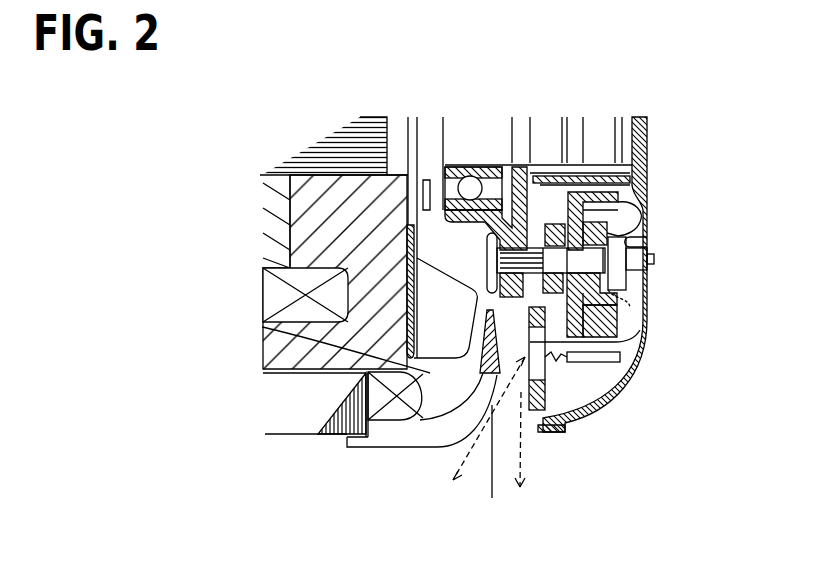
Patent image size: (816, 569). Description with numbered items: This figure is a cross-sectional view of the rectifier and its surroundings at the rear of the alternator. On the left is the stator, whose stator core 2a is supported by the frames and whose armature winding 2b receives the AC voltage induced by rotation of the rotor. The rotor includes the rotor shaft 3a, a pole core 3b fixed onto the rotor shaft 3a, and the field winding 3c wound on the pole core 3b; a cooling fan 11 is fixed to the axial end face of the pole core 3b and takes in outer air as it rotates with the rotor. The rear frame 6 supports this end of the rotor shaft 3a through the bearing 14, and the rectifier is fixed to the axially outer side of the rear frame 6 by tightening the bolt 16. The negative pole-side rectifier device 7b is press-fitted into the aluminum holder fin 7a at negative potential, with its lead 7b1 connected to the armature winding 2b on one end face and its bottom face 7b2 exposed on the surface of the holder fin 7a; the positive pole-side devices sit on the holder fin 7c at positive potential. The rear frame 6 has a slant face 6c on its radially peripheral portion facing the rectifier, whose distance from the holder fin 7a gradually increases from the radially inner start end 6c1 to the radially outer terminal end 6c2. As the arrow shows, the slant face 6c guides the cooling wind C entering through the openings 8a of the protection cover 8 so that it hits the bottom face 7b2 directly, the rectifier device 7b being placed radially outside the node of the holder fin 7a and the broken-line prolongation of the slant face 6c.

The stator core 2a is at (283, 434).
The armature winding 2b is at (390, 410).
The rotor shaft 3a is at (368, 122).
The pole core 3b is at (307, 223).
The field winding 3c is at (283, 276).
The rear frame 6 is at (407, 447).
The slant face 6c is at (498, 400).
The start end 6c1 is at (467, 358).
The terminal end 6c2 is at (465, 350).
The holder fin 7a is at (562, 428).
The negative pole-side rectifier device 7b is at (574, 392).
The lead 7b1 is at (607, 362).
The bottom face 7b2 is at (637, 347).
The holder fin 7c is at (647, 213).
The protection cover 8 is at (640, 140).
The opening 8a is at (531, 430).
The cooling fan 11 is at (437, 282).
The bearing 14 is at (471, 186).
The bolt 16 is at (655, 259).
The cooling wind C is at (485, 470).